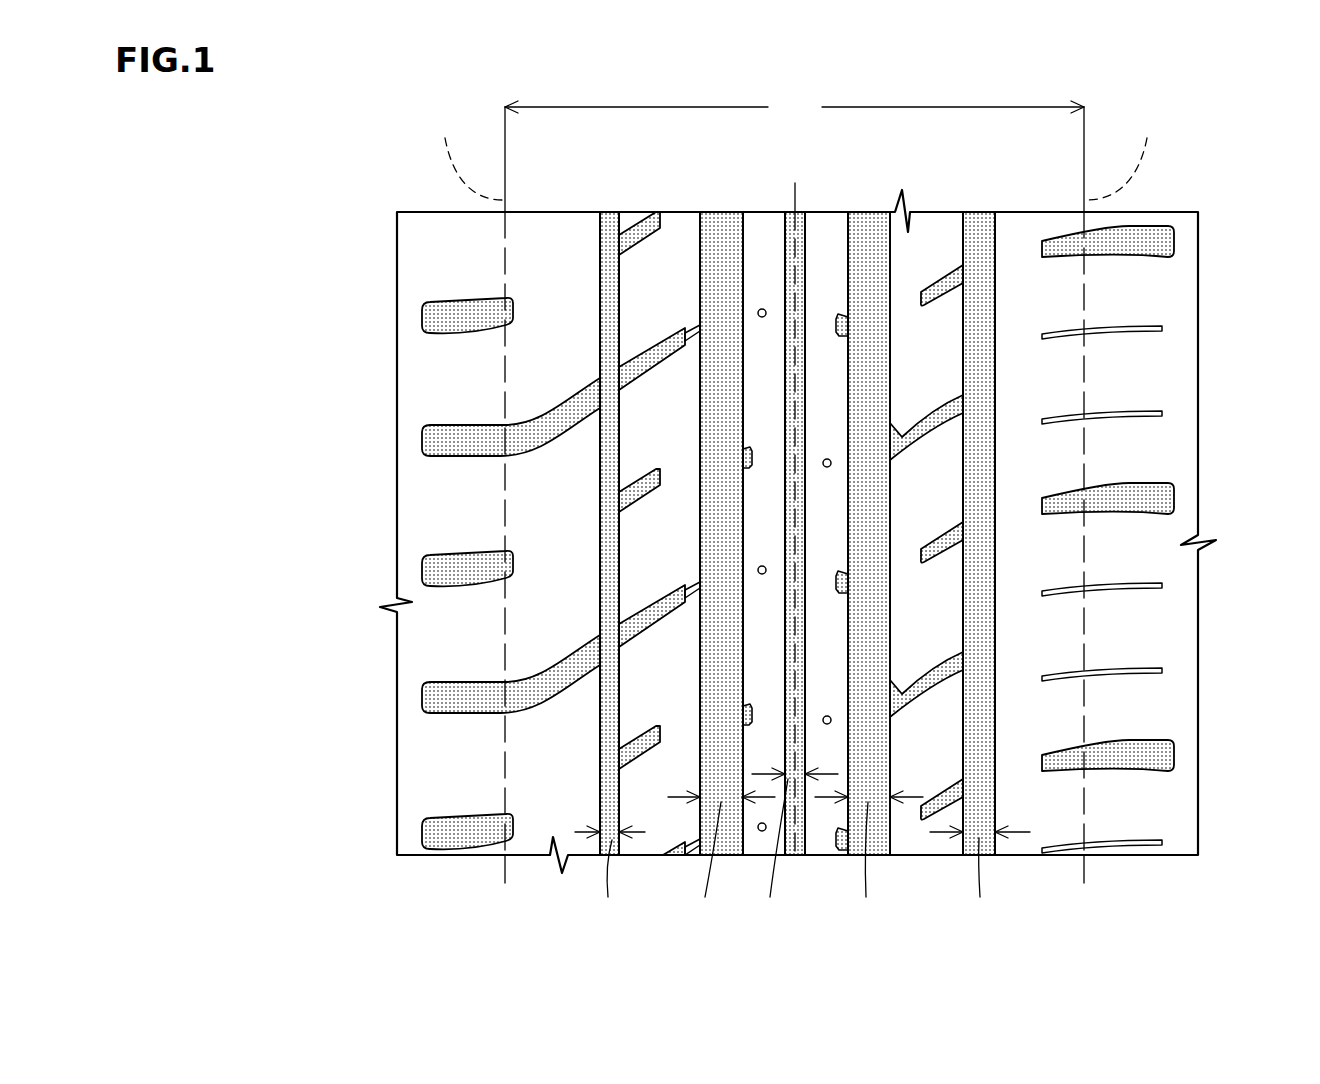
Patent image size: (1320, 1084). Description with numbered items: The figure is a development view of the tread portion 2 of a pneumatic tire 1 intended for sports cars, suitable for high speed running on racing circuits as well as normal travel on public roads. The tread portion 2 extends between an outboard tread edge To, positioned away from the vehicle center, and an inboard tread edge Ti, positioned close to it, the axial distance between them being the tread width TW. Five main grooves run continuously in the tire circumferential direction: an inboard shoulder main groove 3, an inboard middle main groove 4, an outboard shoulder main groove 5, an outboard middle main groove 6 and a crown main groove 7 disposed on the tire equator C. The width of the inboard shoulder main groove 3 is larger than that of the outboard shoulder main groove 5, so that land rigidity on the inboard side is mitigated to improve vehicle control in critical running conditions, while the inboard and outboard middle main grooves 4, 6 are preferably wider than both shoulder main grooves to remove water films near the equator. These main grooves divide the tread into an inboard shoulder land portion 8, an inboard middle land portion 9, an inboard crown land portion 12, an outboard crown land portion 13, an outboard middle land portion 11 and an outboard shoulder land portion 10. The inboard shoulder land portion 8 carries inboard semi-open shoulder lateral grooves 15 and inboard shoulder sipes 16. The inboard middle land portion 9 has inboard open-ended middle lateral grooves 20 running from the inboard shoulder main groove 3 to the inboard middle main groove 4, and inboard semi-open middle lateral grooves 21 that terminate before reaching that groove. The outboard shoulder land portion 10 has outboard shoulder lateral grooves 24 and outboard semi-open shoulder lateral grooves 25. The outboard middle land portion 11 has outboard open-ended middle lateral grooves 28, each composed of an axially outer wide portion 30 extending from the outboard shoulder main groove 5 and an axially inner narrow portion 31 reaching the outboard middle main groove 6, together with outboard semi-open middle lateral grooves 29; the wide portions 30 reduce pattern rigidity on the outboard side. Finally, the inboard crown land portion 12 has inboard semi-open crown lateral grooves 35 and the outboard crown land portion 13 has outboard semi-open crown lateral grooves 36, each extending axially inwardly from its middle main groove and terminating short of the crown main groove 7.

The pneumatic tire 1 is at (1243, 149).
The tread portion 2 is at (1180, 187).
The inboard shoulder main groove 3 is at (977, 248).
The inboard middle main groove 4 is at (865, 248).
The outboard shoulder main groove 5 is at (610, 248).
The outboard middle main groove 6 is at (722, 251).
The crown main groove 7 is at (790, 235).
The inboard shoulder land portion 8 is at (1017, 252).
The inboard middle land portion 9 is at (925, 248).
The outboard shoulder land portion 10 is at (553, 250).
The outboard middle land portion 11 is at (677, 252).
The inboard crown land portion 12 is at (823, 249).
The outboard crown land portion 13 is at (763, 252).
The inboard semi-open shoulder lateral groove 15 is at (1060, 498).
The inboard shoulder sipe 16 is at (1060, 417).
The inboard open-ended middle lateral groove 20 is at (928, 681).
The inboard semi-open middle lateral groove 21 is at (923, 805).
The outboard shoulder lateral groove 24 is at (535, 674).
The outboard semi-open shoulder lateral groove 25 is at (508, 560).
The outboard open-ended middle lateral groove 28 is at (307, 266).
The outboard semi-open middle lateral groove 29 is at (640, 490).
The axially outer wide portion 30 is at (645, 357).
The axially inner narrow portion 31 is at (683, 326).
The inboard semi-open crown lateral groove 35 is at (842, 843).
The outboard semi-open crown lateral groove 36 is at (755, 722).